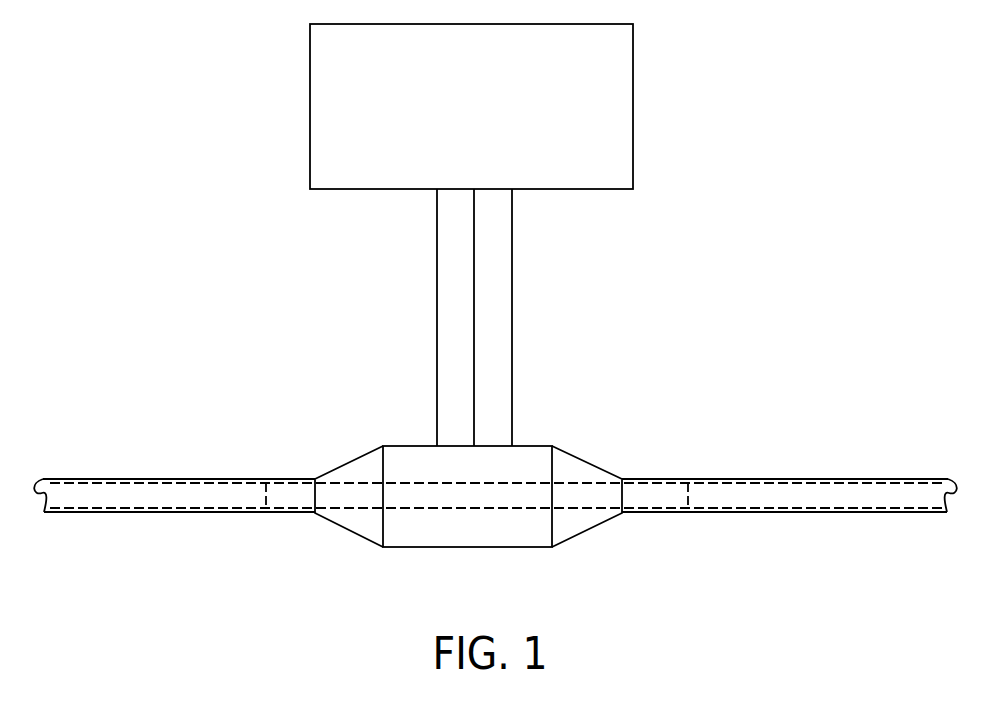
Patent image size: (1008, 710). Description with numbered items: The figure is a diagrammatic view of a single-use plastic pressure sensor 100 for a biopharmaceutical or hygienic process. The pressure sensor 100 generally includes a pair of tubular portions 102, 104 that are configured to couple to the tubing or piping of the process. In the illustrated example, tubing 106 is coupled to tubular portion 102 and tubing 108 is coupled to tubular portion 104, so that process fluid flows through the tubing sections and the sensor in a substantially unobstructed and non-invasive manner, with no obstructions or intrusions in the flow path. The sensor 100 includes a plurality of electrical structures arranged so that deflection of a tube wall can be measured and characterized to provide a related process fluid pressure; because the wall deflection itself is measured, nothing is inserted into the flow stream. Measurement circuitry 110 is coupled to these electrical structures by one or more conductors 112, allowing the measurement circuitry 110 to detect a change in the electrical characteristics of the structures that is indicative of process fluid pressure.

The pressure sensor 100 is at (552, 446).
The tubular portion 102 is at (287, 478).
The tubular portion 104 is at (662, 480).
The tubing 106 is at (217, 476).
The tubing 108 is at (793, 478).
The measurement circuitry 110 is at (458, 126).
The conductors 112 is at (437, 258).